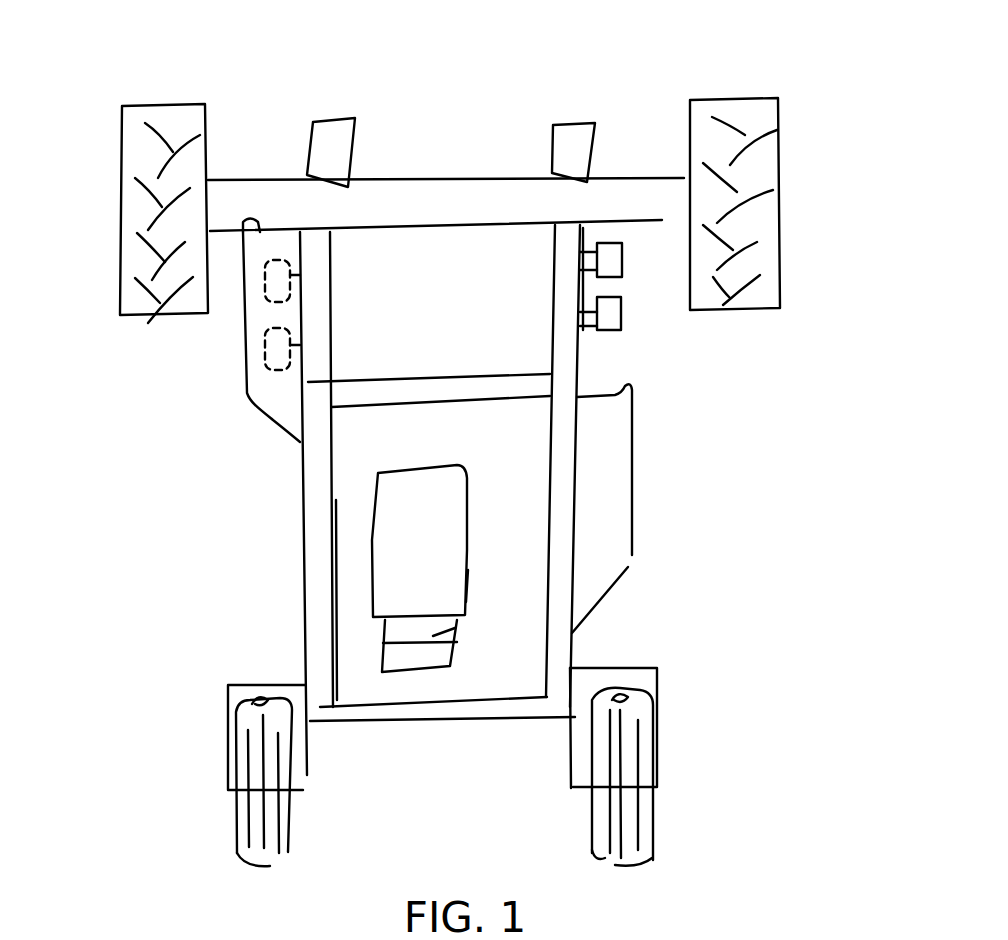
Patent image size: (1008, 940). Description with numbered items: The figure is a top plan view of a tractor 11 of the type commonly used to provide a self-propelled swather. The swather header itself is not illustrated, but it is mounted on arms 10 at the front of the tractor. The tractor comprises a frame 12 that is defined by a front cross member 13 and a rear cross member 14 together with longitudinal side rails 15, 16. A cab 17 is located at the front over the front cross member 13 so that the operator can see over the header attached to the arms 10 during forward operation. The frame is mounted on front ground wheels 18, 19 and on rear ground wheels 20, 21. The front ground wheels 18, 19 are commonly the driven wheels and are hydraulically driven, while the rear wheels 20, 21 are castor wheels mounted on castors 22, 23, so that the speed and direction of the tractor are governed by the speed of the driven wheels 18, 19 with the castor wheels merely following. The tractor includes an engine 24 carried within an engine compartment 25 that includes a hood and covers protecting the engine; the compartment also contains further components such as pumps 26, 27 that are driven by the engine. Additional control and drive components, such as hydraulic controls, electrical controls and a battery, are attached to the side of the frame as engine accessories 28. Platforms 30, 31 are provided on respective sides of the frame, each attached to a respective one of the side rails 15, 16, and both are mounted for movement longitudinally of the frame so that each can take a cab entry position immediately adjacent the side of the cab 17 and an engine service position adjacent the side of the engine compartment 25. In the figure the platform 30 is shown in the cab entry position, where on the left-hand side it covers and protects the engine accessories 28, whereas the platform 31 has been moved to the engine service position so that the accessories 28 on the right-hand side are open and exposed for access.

The arms 10 is at (330, 135).
The tractor 11 is at (461, 108).
The frame 12 is at (657, 408).
The front cross member 13 is at (453, 190).
The rear cross member 14 is at (423, 717).
The side rail 15 is at (312, 492).
The side rail 16 is at (570, 533).
The cab 17 is at (462, 336).
The front ground wheel 18 is at (130, 181).
The front ground wheel 19 is at (765, 208).
The rear ground wheel 20 is at (240, 826).
The rear ground wheel 21 is at (637, 823).
The castor 22 is at (242, 685).
The castor 23 is at (648, 678).
The engine 24 is at (438, 525).
The engine compartment 25 is at (493, 672).
The pump 26 is at (466, 585).
The pump 27 is at (458, 662).
The engine accessories 28 is at (280, 278).
The platform 30 is at (253, 383).
The platform 31 is at (610, 495).